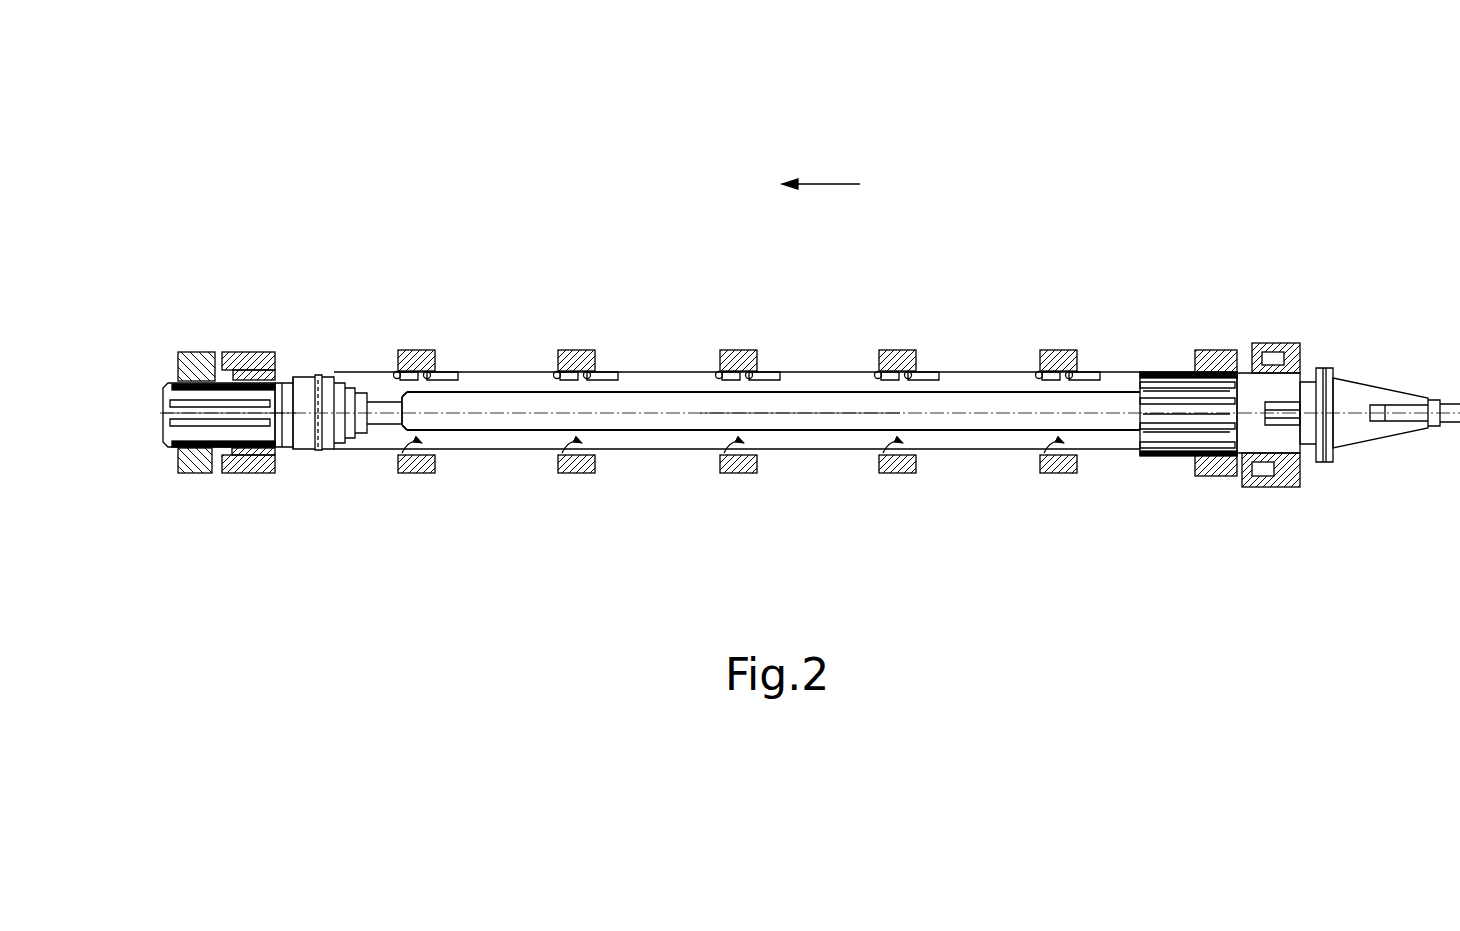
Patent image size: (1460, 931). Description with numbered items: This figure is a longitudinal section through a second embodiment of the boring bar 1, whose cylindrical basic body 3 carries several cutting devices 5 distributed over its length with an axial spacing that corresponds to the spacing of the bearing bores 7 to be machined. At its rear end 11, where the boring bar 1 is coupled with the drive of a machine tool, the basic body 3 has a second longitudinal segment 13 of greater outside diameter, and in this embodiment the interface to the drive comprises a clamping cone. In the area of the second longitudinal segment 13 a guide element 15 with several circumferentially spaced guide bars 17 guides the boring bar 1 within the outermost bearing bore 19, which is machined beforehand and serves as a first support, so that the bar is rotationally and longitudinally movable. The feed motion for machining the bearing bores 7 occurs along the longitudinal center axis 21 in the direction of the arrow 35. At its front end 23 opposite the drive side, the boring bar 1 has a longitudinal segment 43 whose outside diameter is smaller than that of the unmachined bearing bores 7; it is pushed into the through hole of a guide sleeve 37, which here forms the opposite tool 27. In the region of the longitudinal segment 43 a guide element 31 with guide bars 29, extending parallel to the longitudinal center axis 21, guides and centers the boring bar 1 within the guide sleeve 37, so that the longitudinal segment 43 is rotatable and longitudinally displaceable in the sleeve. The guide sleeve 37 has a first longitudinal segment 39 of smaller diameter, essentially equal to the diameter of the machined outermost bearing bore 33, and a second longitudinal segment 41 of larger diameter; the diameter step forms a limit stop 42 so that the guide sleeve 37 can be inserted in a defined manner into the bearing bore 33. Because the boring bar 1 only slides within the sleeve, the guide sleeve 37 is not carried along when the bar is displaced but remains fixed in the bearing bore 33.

The boring bar 1 is at (496, 212).
The basic body 3 is at (660, 390).
The cutting devices 5 is at (396, 370).
The bearing bores 7 is at (428, 474).
The rear end 11 is at (1233, 293).
The second longitudinal segment 13 is at (1155, 456).
The guide element 15 is at (1180, 460).
The guide bars 17 is at (1197, 448).
The outermost bearing bore 19 is at (1224, 478).
The longitudinal center axis 21 is at (817, 420).
The front end 23 is at (346, 296).
The opposite tool 27 is at (194, 333).
The guide bars 29 is at (232, 470).
The guide element 31 is at (161, 448).
The outermost bearing bore 33 is at (258, 478).
The arrow 35 is at (812, 184).
The guide sleeve 37 is at (207, 350).
The first longitudinal segment 39 is at (287, 350).
The second longitudinal segment 41 is at (187, 475).
The limit stop 42 is at (220, 338).
The longitudinal segment 43 is at (282, 448).